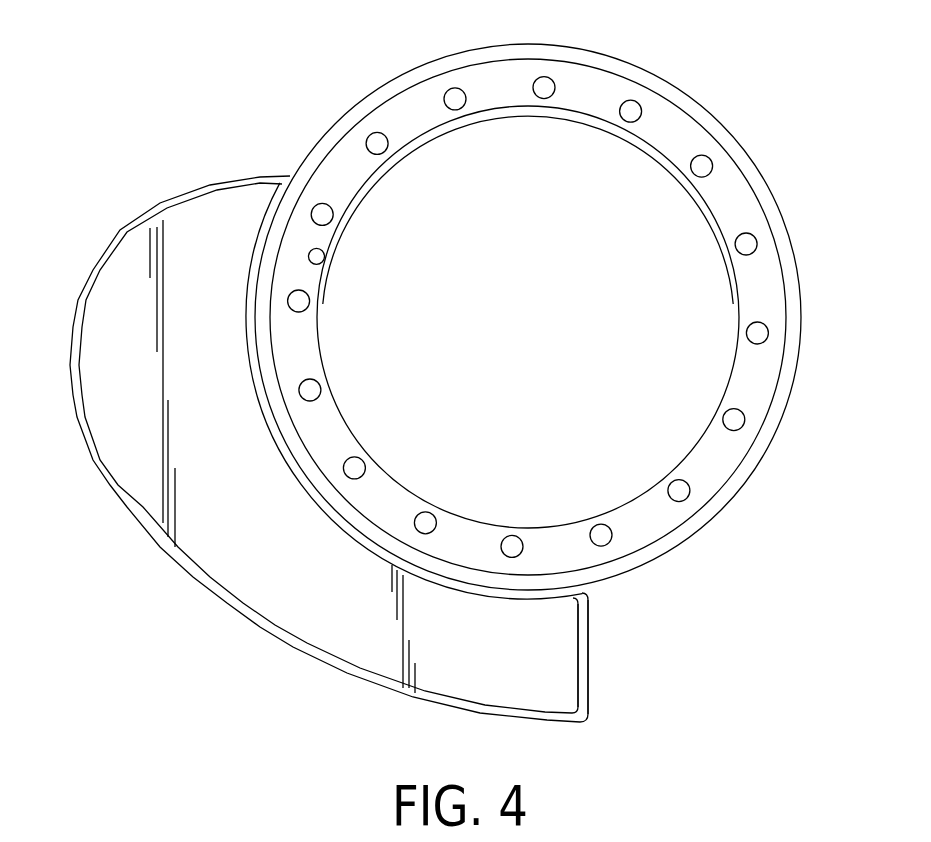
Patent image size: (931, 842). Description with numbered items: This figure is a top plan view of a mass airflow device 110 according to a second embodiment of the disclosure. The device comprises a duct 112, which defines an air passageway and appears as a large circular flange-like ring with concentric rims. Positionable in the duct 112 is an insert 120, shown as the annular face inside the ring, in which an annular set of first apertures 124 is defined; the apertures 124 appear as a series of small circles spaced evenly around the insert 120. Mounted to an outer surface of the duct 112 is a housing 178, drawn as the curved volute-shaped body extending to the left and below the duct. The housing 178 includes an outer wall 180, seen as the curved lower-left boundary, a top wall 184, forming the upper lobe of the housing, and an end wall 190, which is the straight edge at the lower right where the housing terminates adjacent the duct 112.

The mass airflow device 110 is at (650, 72).
The duct 112 is at (735, 137).
The insert 120 is at (410, 105).
The first apertures 124 is at (747, 240).
The housing 178 is at (293, 655).
The outer wall 180 is at (178, 572).
The top wall 184 is at (125, 268).
The end wall 190 is at (591, 661).